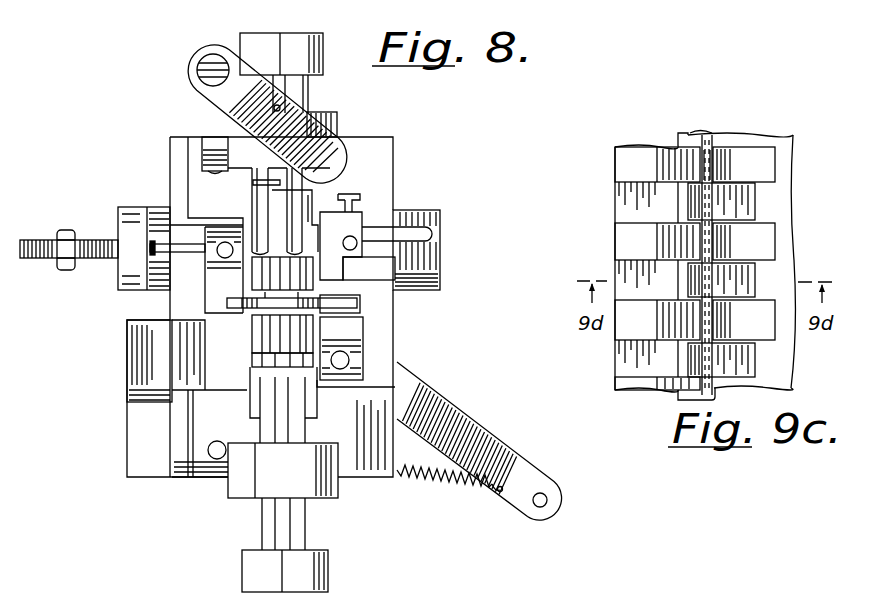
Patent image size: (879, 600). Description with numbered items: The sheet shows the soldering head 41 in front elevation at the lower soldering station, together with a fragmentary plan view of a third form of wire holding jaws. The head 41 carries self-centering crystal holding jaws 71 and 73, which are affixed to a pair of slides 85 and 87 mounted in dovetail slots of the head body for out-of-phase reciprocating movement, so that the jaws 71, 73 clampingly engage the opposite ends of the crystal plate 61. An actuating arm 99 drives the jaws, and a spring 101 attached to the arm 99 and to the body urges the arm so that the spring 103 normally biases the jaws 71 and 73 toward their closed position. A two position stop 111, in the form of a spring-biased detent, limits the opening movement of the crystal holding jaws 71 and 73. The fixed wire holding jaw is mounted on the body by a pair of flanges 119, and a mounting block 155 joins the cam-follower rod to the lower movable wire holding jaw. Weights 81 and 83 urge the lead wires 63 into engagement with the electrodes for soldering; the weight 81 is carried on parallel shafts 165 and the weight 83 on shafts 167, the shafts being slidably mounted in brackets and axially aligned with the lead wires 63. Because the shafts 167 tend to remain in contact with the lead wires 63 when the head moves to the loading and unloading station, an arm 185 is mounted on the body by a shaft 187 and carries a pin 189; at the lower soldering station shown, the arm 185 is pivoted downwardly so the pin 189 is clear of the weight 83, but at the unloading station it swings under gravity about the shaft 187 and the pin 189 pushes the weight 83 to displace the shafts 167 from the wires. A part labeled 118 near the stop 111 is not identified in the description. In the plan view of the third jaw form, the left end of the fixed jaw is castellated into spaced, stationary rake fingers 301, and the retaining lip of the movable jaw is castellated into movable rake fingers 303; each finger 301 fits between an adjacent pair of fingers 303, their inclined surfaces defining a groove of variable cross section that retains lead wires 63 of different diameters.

In FIG. 8, the head 41 is at (152, 130).
In FIG. 8, the weight 83 is at (328, 42).
In FIG. 8, the arm 185 is at (322, 142).
In FIG. 8, the shaft 187 is at (212, 68).
In FIG. 8, the pin 189 is at (281, 108).
In FIG. 8, the shafts 167 is at (318, 190).
In FIG. 8, the lead wires 63 is at (296, 252).
In FIG. 9C, the lead wires 63 is at (711, 165).
In FIG. 8, the crystal holding jaw 73 is at (212, 304).
In FIG. 8, the crystal plate 61 is at (249, 300).
In FIG. 8, the two position stop 111 is at (90, 232).
In FIG. 8, the lock nut 118 is at (63, 268).
In FIG. 8, the mounting block 155 is at (337, 243).
In FIG. 8, the slide 87 is at (422, 213).
In FIG. 8, the crystal holding jaw 71 is at (352, 302).
In FIG. 8, the slide 85 is at (140, 368).
In FIG. 8, the flanges 119 is at (212, 430).
In FIG. 8, the shafts 165 is at (300, 520).
In FIG. 8, the weight 81 is at (240, 577).
In FIG. 8, the actuating arm 99 is at (504, 452).
In FIG. 8, the spring 103 is at (548, 501).
In FIG. 8, the spring 101 is at (463, 491).
In FIG. 9C, the movable rake fingers 303 is at (632, 157).
In FIG. 9C, the stationary rake fingers 301 is at (720, 273).